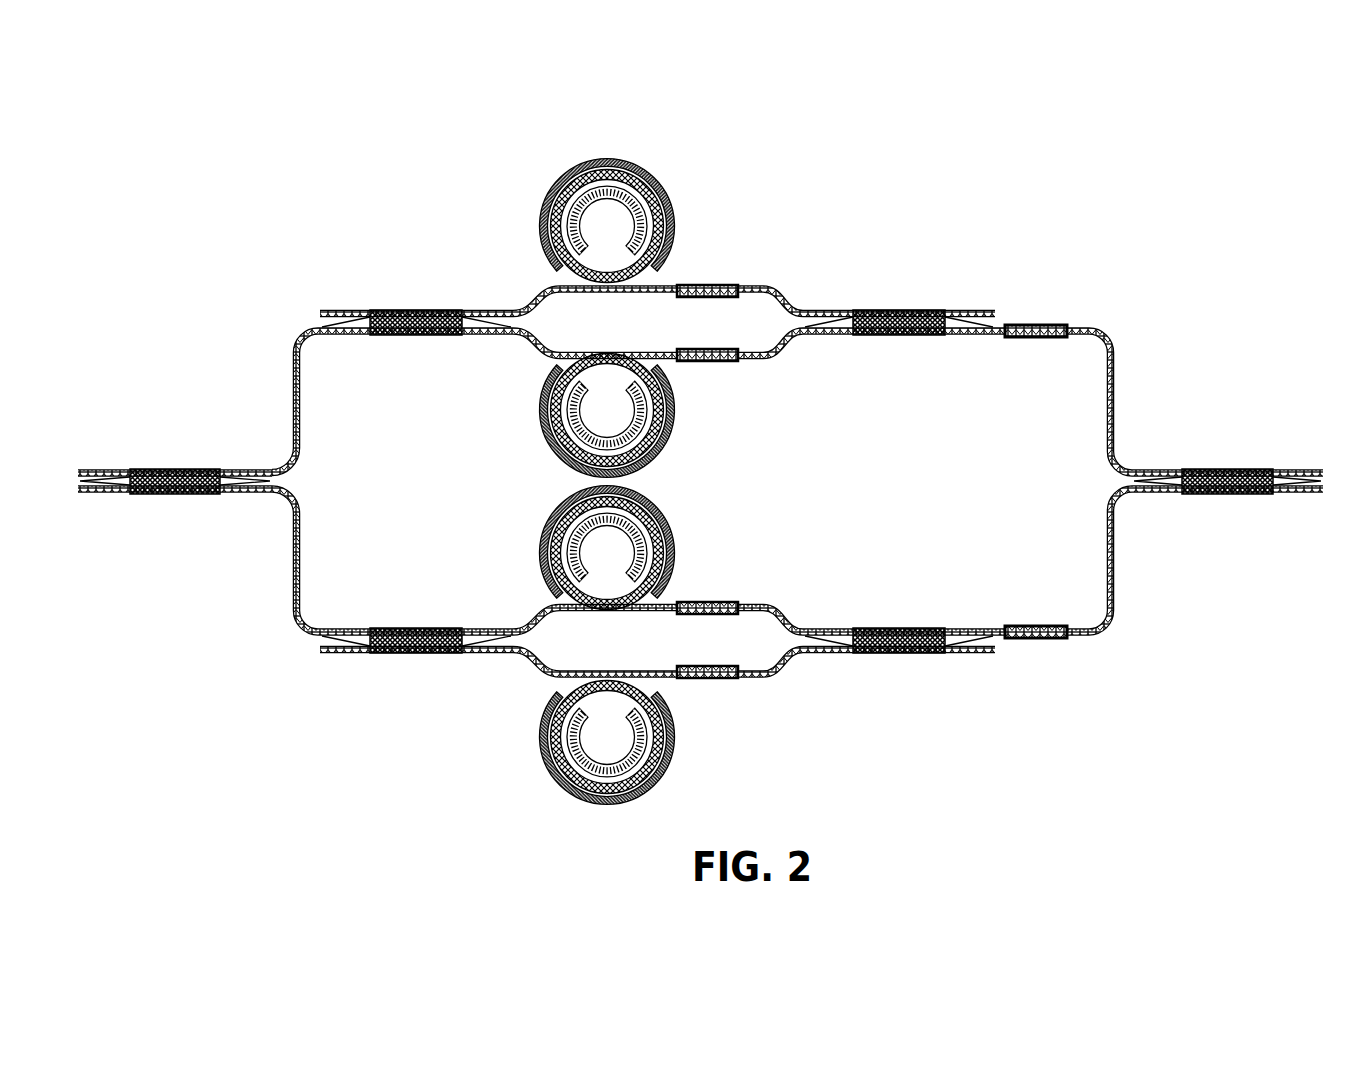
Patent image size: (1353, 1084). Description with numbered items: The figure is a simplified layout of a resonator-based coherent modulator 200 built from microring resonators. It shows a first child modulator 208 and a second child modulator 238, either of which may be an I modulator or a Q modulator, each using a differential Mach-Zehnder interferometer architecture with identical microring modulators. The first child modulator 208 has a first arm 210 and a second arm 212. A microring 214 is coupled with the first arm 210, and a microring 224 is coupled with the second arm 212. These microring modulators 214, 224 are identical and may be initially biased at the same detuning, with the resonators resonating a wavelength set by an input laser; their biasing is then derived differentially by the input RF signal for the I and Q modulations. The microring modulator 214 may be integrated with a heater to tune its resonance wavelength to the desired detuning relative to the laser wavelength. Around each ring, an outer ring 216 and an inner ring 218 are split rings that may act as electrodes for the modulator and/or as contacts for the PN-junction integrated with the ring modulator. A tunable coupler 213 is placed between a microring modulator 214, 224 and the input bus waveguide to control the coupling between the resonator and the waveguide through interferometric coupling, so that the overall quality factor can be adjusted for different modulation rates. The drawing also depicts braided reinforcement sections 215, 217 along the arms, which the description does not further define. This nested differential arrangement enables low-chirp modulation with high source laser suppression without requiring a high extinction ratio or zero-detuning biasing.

The resonator-based coherent modulator 200 is at (1082, 171).
The first child modulator 208 is at (1115, 368).
The first arm 210 is at (776, 299).
The second arm 212 is at (772, 356).
The tunable coupler 213 is at (1034, 325).
The microring 214 is at (676, 231).
The braided reinforcement section 215 is at (896, 311).
The outer ring 216 is at (603, 171).
The braided reinforcement section 217 is at (896, 628).
The inner ring 218 is at (655, 192).
The microring 224 is at (676, 426).
The second child modulator 238 is at (1114, 592).